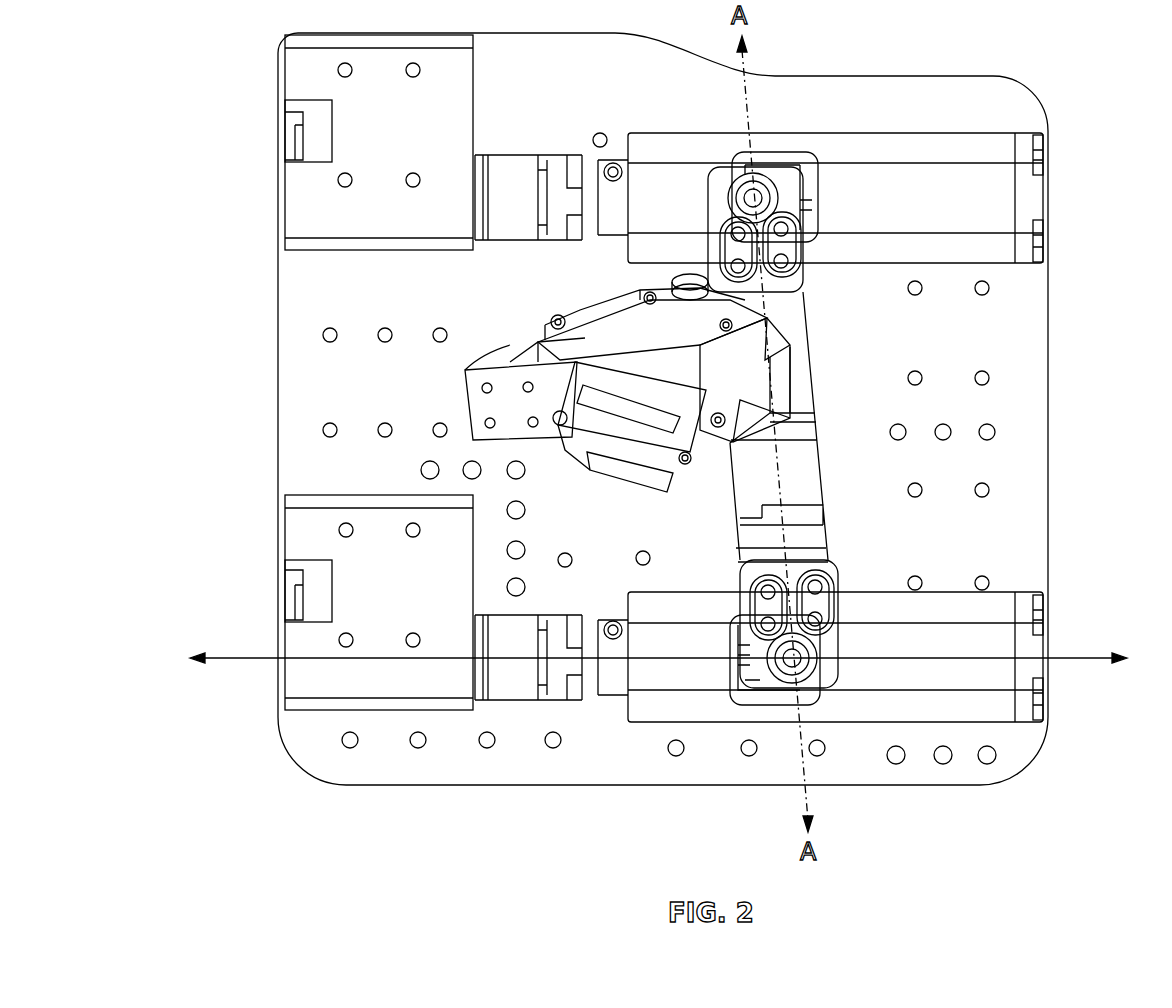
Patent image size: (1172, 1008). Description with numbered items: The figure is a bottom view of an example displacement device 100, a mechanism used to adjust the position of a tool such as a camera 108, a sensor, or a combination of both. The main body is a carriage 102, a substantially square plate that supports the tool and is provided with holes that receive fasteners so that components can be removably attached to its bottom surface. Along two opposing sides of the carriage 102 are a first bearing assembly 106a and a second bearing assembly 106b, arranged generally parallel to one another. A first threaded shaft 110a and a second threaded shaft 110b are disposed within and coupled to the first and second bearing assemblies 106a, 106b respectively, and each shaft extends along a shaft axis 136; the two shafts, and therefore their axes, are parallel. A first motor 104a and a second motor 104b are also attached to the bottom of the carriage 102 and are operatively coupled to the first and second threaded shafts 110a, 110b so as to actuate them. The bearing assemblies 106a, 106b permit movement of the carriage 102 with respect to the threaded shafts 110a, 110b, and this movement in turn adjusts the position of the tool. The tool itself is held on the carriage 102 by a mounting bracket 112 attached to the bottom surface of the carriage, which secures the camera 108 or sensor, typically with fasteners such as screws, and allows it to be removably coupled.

The displacement device 100 is at (216, 152).
The carriage 102 is at (1015, 440).
The first motor 104a is at (296, 540).
The second motor 104b is at (296, 212).
The first bearing assembly 106a is at (990, 612).
The second bearing assembly 106b is at (1005, 215).
The camera 108 is at (600, 340).
The first threaded shaft 110a is at (738, 660).
The second threaded shaft 110b is at (818, 200).
The mounting bracket 112 is at (810, 455).
The shaft axis 136 is at (681, 659).